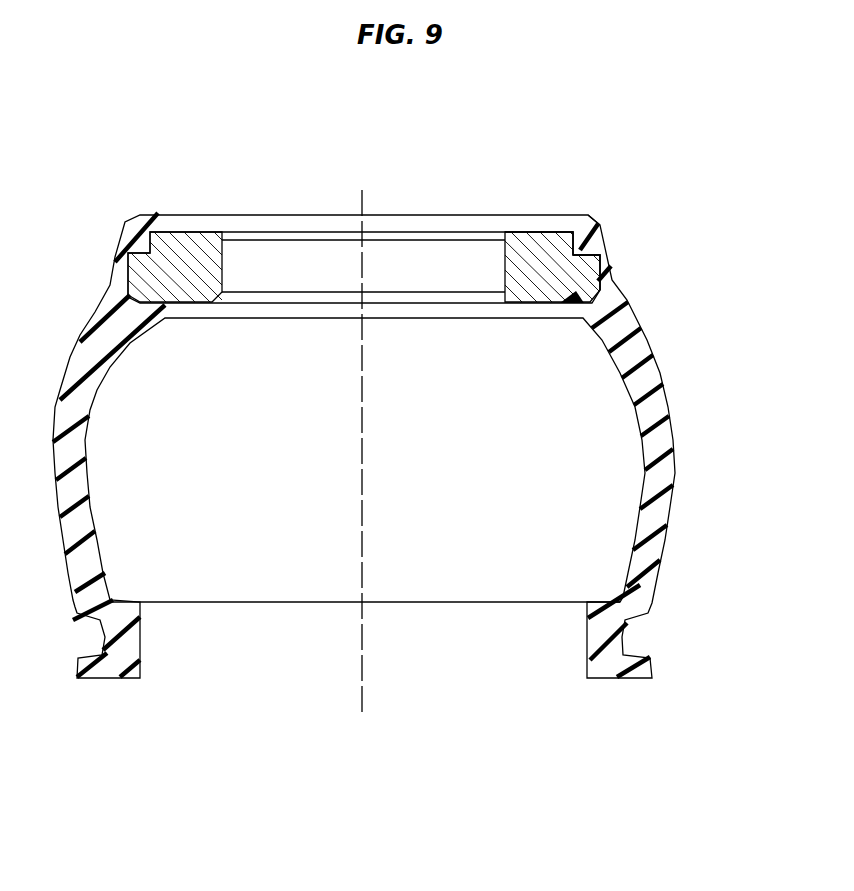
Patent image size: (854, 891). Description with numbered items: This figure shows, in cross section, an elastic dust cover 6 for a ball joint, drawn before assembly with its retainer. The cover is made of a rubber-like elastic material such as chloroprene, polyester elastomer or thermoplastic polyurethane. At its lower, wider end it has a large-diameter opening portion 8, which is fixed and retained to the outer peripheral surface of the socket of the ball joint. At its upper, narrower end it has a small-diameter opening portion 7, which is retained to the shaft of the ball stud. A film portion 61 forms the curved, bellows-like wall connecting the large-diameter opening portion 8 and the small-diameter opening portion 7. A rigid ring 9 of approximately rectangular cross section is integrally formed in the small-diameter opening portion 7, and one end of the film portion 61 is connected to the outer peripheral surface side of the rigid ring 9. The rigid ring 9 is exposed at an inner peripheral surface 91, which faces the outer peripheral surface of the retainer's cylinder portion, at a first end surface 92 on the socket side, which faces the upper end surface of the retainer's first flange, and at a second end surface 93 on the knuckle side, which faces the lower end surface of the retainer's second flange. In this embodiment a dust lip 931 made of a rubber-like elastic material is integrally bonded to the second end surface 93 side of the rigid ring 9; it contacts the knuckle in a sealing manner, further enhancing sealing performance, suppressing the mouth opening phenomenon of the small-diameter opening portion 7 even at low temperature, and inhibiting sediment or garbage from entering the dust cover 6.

The elastic dust cover 6 is at (683, 346).
The film portion 61 is at (673, 454).
The small-diameter opening portion 7 is at (538, 318).
The large-diameter opening portion 8 is at (625, 637).
The rigid ring 9 is at (603, 234).
The inner peripheral surface 91 is at (505, 268).
The first end surface 92 is at (604, 278).
The second end surface 93 is at (540, 232).
The dust lip 931 is at (598, 220).